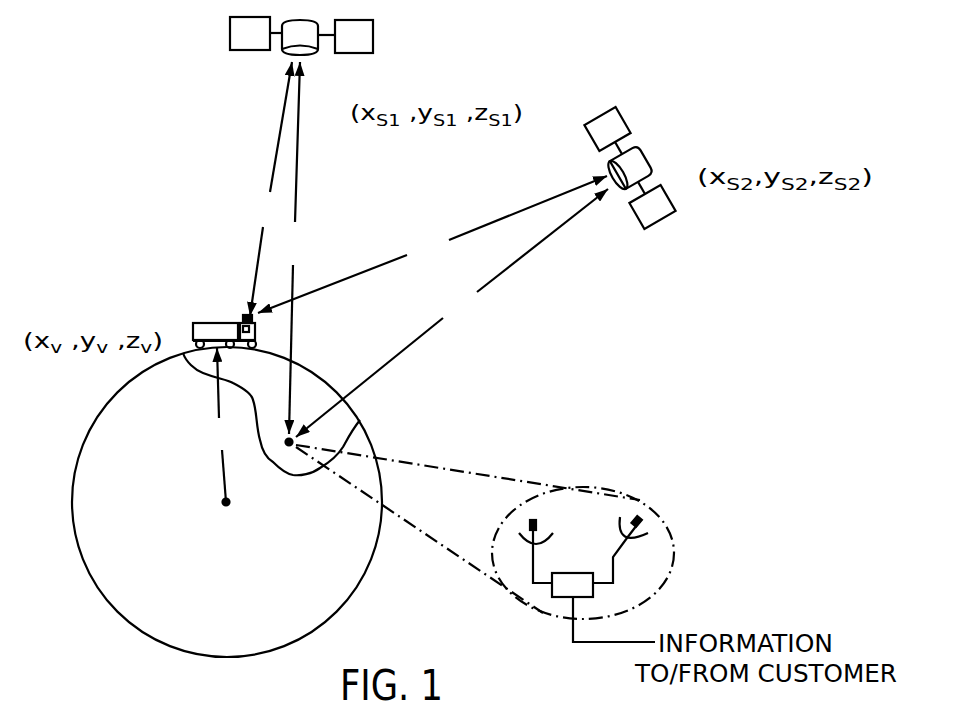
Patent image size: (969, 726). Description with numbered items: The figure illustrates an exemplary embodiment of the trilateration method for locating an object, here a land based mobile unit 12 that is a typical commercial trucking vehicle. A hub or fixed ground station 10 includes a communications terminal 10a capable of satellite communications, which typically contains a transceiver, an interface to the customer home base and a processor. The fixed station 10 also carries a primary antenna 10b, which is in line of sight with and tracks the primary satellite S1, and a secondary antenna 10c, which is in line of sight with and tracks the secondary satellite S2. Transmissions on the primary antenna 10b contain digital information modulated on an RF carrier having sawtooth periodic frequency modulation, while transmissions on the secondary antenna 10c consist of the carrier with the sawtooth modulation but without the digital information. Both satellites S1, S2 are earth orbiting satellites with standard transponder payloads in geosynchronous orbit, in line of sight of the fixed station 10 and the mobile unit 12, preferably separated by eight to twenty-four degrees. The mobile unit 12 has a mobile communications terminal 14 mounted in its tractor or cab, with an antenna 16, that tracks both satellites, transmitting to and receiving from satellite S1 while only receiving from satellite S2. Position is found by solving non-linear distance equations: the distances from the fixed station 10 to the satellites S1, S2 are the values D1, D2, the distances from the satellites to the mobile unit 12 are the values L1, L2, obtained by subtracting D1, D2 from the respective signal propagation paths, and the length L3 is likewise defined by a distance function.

The fixed ground station 10 is at (289, 451).
The communications terminal 10a is at (594, 592).
The primary antenna 10b is at (637, 546).
The secondary antenna 10c is at (553, 533).
The mobile unit 12 is at (196, 323).
The mobile communications terminal 14 is at (241, 328).
The antenna 16 is at (246, 316).
The primary satellite S1 is at (312, 42).
The secondary satellite S2 is at (645, 162).
The distance value L1 is at (271, 189).
The distance value L2 is at (432, 244).
The length L3 is at (220, 425).
The distance value D1 is at (301, 248).
The distance value D2 is at (452, 313).